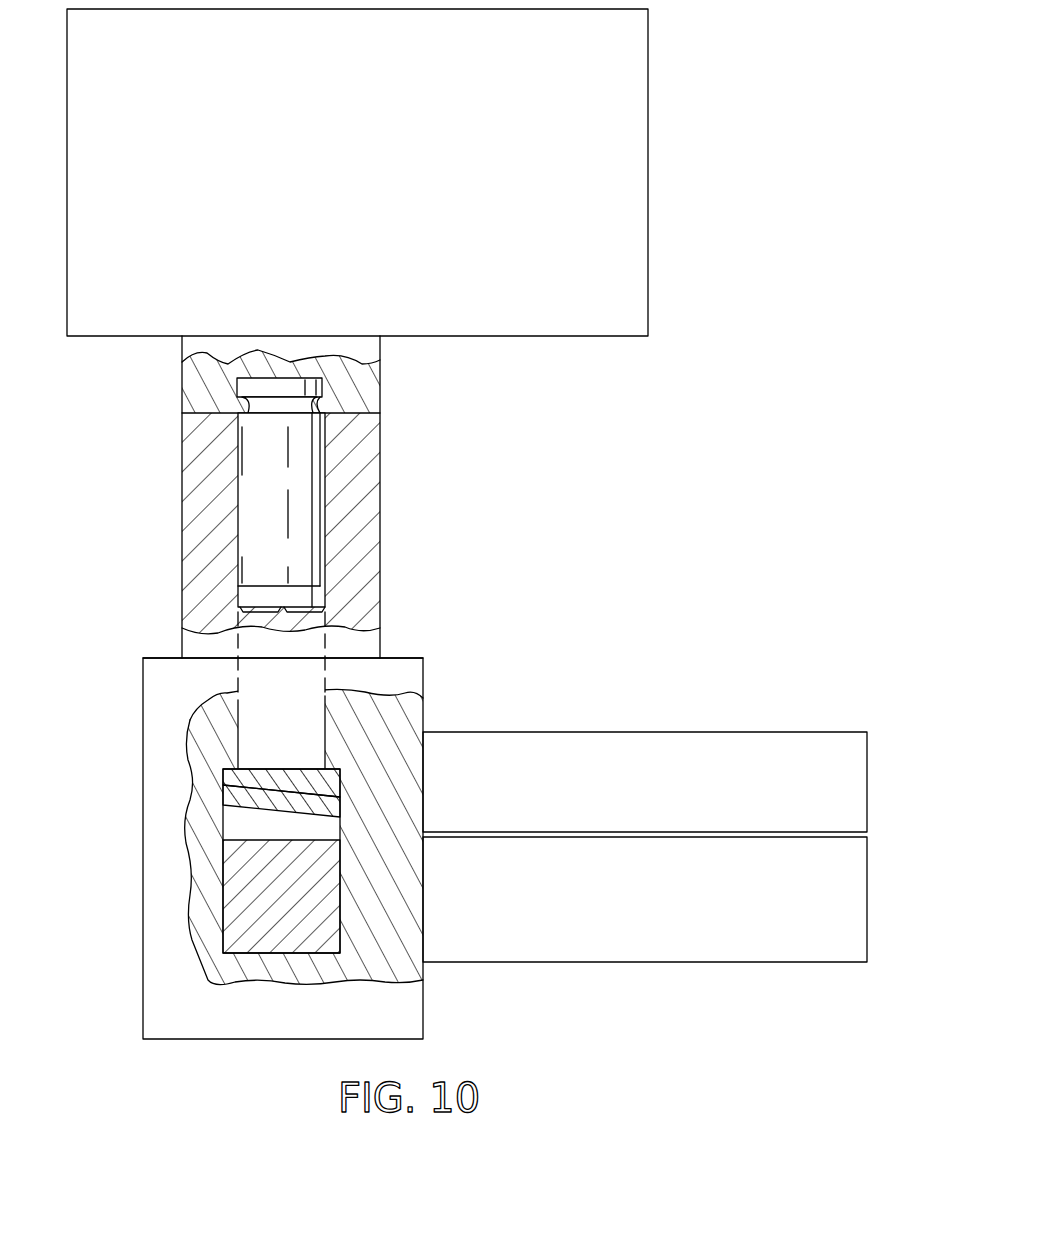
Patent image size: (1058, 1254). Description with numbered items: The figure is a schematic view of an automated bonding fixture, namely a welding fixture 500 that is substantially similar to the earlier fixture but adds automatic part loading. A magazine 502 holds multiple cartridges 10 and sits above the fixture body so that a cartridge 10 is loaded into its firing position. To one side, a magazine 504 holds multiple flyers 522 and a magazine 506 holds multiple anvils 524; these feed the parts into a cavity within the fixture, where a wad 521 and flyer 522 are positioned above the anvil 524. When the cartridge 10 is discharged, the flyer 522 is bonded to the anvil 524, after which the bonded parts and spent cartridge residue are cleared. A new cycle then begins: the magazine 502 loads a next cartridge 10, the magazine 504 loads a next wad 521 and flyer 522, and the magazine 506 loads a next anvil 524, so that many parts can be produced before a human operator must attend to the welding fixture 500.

The welding fixture 500 is at (789, 268).
The magazine 502 is at (630, 130).
The cartridge 10 is at (324, 501).
The magazine 504 is at (677, 743).
The magazine 506 is at (685, 948).
The wad 521 is at (328, 779).
The flyer 522 is at (255, 800).
The anvil 524 is at (235, 907).